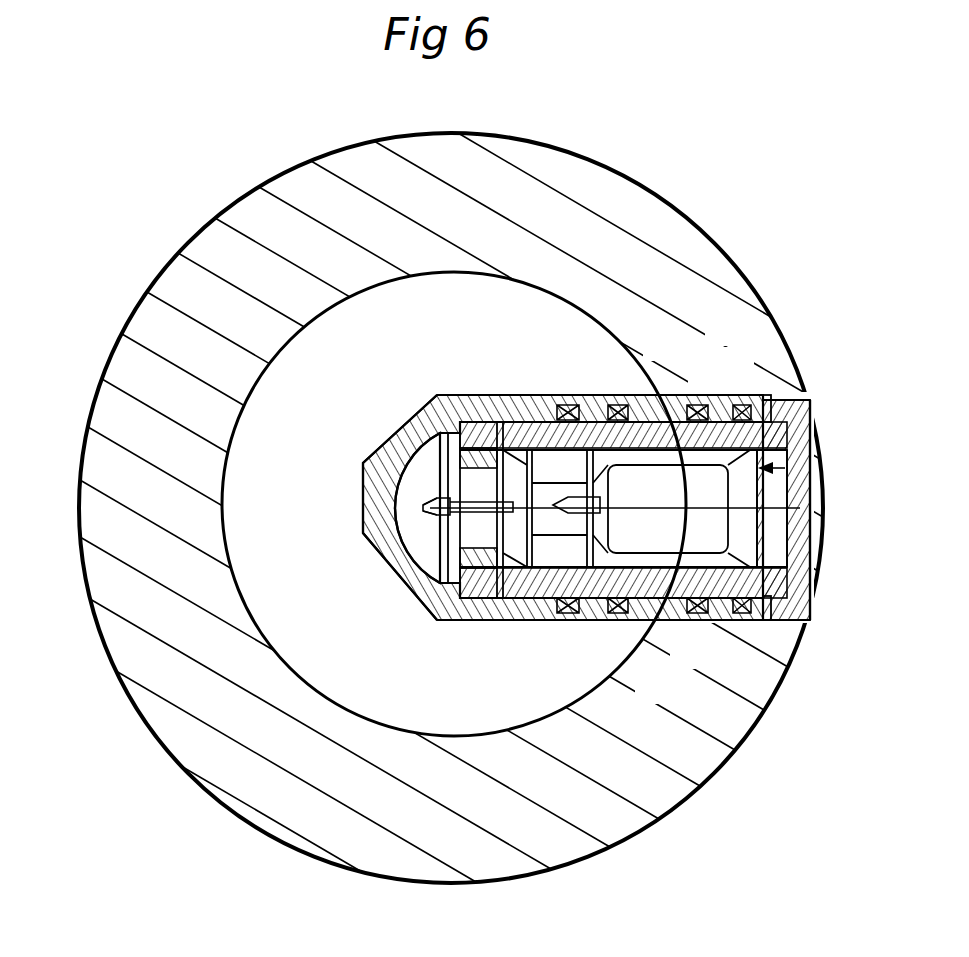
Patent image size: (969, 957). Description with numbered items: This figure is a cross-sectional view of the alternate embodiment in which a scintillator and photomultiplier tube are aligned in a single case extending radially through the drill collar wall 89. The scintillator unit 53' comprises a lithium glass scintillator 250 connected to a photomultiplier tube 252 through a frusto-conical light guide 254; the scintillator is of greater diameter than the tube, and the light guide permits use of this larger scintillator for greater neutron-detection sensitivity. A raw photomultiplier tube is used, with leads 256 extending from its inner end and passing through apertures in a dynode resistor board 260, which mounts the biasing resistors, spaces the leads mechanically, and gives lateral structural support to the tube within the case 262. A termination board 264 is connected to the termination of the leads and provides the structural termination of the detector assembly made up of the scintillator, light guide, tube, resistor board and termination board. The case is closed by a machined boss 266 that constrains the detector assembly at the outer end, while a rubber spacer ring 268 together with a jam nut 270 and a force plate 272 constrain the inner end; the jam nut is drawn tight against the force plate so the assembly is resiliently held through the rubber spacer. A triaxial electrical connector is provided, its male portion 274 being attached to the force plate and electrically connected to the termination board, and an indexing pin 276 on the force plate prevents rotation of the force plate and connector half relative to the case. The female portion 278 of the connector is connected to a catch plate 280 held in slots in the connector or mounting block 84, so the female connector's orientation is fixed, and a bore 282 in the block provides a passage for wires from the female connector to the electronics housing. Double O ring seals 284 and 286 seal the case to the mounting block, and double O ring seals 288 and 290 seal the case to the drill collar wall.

The drill collar wall 89 is at (128, 358).
The lithium glass scintillator 250 is at (580, 499).
The photomultiplier tube 252 is at (780, 393).
The frusto-conical light guide 254 is at (812, 440).
The leads 256 is at (680, 425).
The dynode resistor board 260 is at (600, 545).
The case 262 is at (764, 398).
The termination board 264 is at (545, 560).
The machined boss 266 is at (785, 398).
The rubber spacer ring 268 is at (555, 510).
The jam nut 270 is at (437, 395).
The force plate 272 is at (497, 425).
The male portion of the triaxial connector 274 is at (470, 560).
The indexing pin 276 is at (507, 545).
The female portion of the triaxial connector 278 is at (460, 540).
The catch plate 280 is at (406, 425).
The bore 282 is at (403, 520).
The O ring seal 284 is at (525, 412).
The O ring seal 286 is at (618, 408).
The O ring seal 288 is at (705, 405).
The O ring seal 290 is at (707, 482).
The mounting block 84 is at (486, 560).
The scintillator unit 53' is at (851, 472).